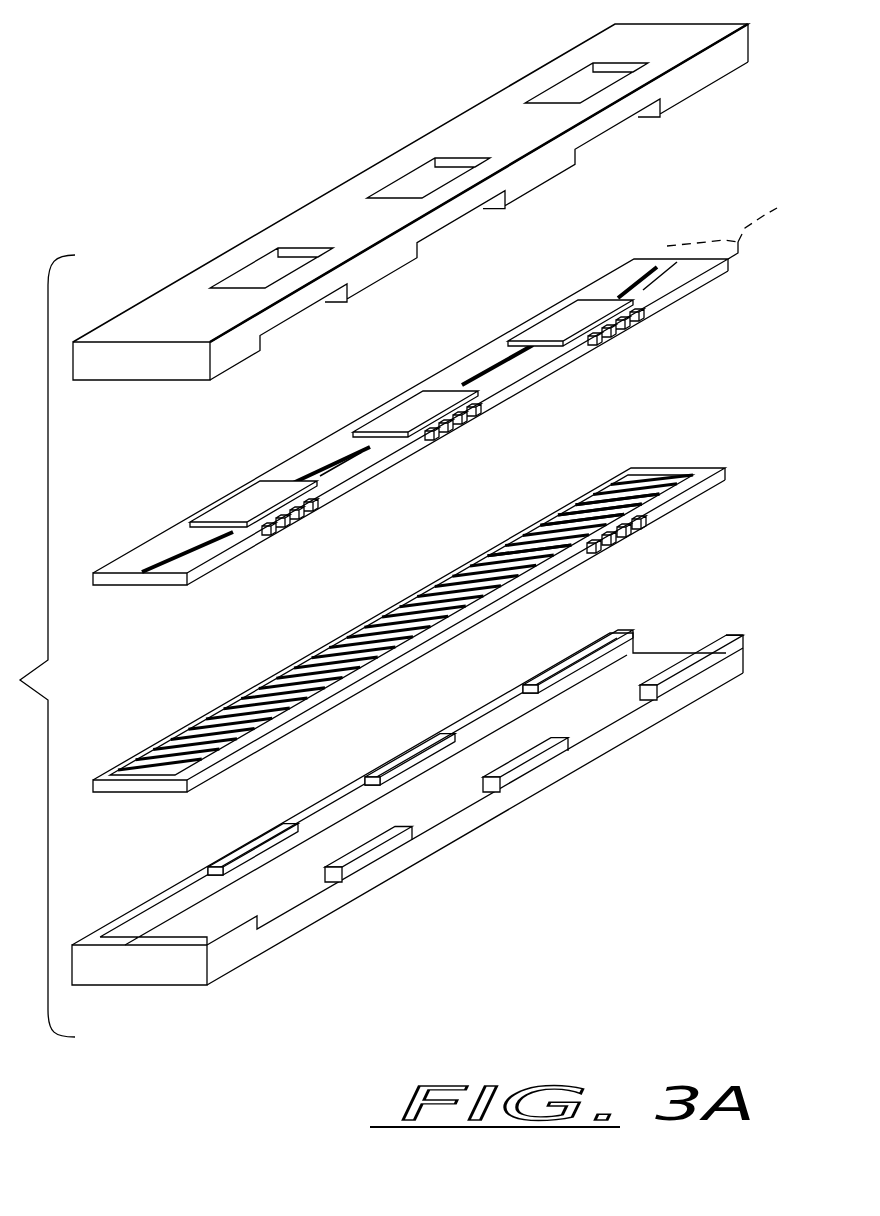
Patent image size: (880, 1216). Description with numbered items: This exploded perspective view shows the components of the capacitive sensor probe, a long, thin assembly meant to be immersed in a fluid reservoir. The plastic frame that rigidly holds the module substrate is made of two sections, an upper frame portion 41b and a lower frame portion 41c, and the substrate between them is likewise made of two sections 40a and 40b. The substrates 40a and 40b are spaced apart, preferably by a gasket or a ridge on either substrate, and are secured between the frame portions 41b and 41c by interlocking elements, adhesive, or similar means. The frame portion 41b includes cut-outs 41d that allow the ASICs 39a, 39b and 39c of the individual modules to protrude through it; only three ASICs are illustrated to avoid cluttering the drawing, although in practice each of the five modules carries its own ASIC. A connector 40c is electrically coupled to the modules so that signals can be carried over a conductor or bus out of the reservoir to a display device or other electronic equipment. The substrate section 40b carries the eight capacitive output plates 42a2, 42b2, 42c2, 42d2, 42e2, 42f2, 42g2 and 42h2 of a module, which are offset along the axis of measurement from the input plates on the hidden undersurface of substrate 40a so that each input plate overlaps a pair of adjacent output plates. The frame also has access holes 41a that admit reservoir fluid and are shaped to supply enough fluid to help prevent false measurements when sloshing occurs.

The frame portion 41b is at (146, 309).
The cut-outs 41d is at (264, 266).
The substrate section 40a is at (119, 587).
The ASIC 39a is at (558, 308).
The ASIC 39b is at (375, 413).
The ASIC 39c is at (222, 503).
The connector 40c is at (732, 225).
The substrate section 40b is at (119, 792).
The capacitive output plate 42a2 is at (650, 478).
The capacitive output plate 42b2 is at (622, 472).
The capacitive output plate 42c2 is at (607, 490).
The capacitive output plate 42d2 is at (646, 502).
The capacitive output plate 42e2 is at (648, 512).
The capacitive output plate 42f2 is at (633, 520).
The capacitive output plate 42g2 is at (607, 527).
The capacitive output plate 42h2 is at (541, 528).
The frame portion 41c is at (184, 960).
The access holes 41a is at (523, 689).